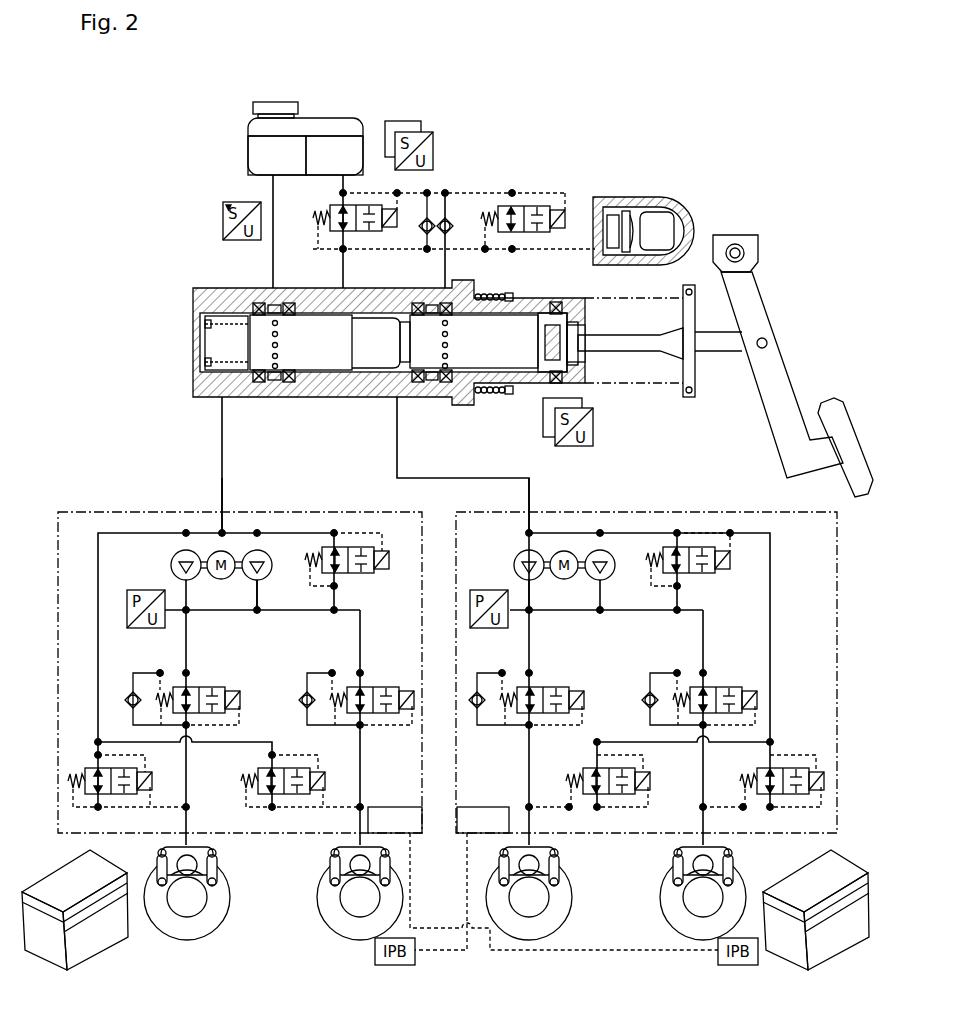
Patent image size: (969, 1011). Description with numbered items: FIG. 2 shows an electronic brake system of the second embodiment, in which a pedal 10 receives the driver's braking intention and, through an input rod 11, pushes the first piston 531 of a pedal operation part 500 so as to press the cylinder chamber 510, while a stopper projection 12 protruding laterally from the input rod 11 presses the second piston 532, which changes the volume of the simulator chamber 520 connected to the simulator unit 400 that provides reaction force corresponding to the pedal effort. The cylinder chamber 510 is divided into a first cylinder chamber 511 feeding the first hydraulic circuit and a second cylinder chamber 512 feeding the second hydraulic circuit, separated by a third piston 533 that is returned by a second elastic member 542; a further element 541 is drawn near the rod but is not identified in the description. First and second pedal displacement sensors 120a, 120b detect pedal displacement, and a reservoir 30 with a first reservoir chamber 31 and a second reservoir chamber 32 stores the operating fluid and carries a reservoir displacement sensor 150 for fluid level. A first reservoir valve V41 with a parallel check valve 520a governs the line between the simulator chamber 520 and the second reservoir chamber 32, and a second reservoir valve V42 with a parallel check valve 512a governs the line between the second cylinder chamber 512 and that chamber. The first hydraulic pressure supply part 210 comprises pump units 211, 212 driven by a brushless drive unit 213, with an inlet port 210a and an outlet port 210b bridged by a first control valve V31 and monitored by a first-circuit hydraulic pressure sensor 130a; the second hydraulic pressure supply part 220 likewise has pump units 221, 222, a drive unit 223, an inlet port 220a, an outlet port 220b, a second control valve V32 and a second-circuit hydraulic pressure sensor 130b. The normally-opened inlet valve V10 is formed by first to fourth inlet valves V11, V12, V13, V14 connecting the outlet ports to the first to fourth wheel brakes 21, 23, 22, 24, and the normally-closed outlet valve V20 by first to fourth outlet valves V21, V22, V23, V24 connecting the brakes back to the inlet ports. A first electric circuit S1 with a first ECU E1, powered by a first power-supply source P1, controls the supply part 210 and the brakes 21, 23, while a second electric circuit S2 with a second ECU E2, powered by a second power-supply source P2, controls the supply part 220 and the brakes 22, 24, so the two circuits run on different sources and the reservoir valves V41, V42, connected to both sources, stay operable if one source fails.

The pedal 10 is at (792, 373).
The input rod 11 is at (721, 350).
The stopper projection 12 is at (582, 334).
The reservoir 30 is at (247, 115).
The first reservoir chamber 31 is at (270, 154).
The second reservoir chamber 32 is at (326, 155).
The reservoir displacement sensor 150 is at (408, 121).
The second pedal displacement sensor 120b is at (223, 232).
The first pedal displacement sensor 120a is at (593, 437).
The simulator unit 400 is at (648, 188).
The pedal operation part 500 is at (185, 294).
The second elastic member 542 is at (225, 328).
The third piston 533 is at (298, 332).
The first cylinder chamber 511 is at (238, 372).
The second cylinder chamber 512 is at (380, 370).
The cylinder chamber 510 is at (322, 354).
The check valve 512a is at (425, 236).
The check valve 520a is at (448, 216).
The first piston 531 is at (490, 324).
The second piston 532 is at (561, 312).
The simulator chamber 520 is at (488, 393).
The rod guide 541 is at (651, 384).
The second reservoir valve V42 is at (363, 233).
The first reservoir valve V41 is at (538, 233).
The first electric circuit S1 is at (93, 512).
The second electric circuit S2 is at (761, 512).
The first hydraulic pressure supply part 210 is at (203, 519).
The first pump unit 211 is at (181, 550).
The drive unit 213 is at (216, 551).
The second pump unit 212 is at (226, 522).
The inlet port 210a is at (258, 550).
The outlet port 210b is at (258, 614).
The first control valve V31 is at (352, 545).
The first-circuit hydraulic pressure sensor 130a is at (144, 629).
The inlet valve V10 is at (204, 677).
The first inlet valve V11 is at (242, 701).
The third inlet valve V13 is at (401, 688).
The outlet valve V20 is at (107, 810).
The first outlet valve V21 is at (145, 797).
The third outlet valve V23 is at (318, 797).
The first electronic control unit E1 is at (395, 807).
The second hydraulic pressure supply part 220 is at (550, 529).
The first pump unit 221 is at (513, 561).
The drive unit 223 is at (567, 551).
The second pump unit 222 is at (605, 550).
The inlet port 220a is at (533, 530).
The outlet port 220b is at (531, 614).
The second control valve V32 is at (697, 545).
The second-circuit hydraulic pressure sensor 130b is at (487, 629).
The second inlet valve V12 is at (586, 701).
The fourth inlet valve V14 is at (746, 688).
The second outlet valve V22 is at (641, 797).
The fourth outlet valve V24 is at (819, 797).
The second electronic control unit E2 is at (480, 807).
The first wheel brake 21 is at (221, 902).
The second wheel brake 22 is at (565, 902).
The third wheel brake 23 is at (325, 885).
The fourth wheel brake 24 is at (668, 885).
The first power-supply source P1 is at (105, 945).
The second power-supply source P2 is at (848, 945).